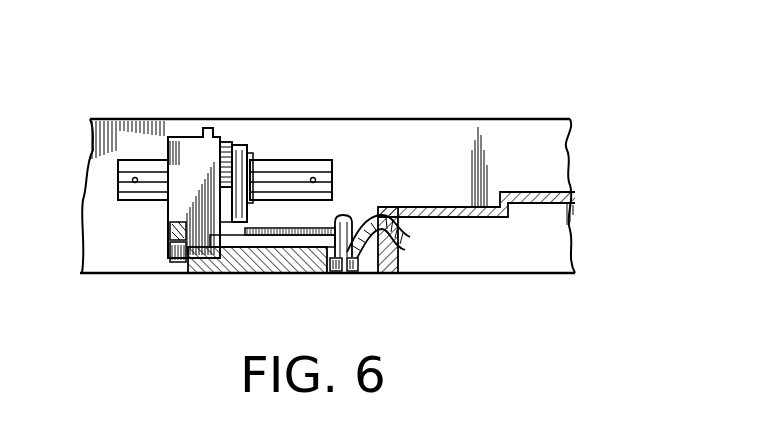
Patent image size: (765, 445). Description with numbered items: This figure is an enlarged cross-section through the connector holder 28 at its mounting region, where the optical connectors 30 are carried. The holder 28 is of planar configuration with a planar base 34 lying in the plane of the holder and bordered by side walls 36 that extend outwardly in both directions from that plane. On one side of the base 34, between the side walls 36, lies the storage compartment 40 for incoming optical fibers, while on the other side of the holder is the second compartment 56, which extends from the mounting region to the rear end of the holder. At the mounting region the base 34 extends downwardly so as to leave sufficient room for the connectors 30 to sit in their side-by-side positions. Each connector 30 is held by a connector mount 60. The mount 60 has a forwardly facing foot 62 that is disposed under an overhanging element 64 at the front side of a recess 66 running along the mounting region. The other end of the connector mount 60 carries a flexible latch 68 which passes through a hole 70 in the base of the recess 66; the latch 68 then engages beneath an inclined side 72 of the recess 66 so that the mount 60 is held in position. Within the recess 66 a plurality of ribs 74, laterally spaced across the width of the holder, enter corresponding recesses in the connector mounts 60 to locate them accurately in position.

The connector holder 28 is at (573, 131).
The optical connector 30 is at (138, 160).
The planar base 34 is at (577, 188).
The side wall 36 is at (450, 138).
The storage compartment 40 is at (556, 248).
The second compartment 56 is at (518, 140).
The connector mount 60 is at (188, 147).
The forwardly facing foot 62 is at (187, 276).
The overhanging element 64 is at (168, 243).
The recess 66 is at (248, 235).
The flexible latch 68 is at (362, 260).
The hole 70 is at (348, 238).
The inclined side 72 is at (411, 243).
The rib 74 is at (262, 275).